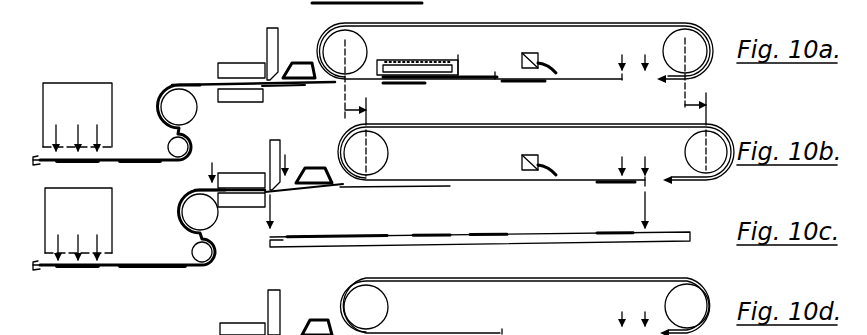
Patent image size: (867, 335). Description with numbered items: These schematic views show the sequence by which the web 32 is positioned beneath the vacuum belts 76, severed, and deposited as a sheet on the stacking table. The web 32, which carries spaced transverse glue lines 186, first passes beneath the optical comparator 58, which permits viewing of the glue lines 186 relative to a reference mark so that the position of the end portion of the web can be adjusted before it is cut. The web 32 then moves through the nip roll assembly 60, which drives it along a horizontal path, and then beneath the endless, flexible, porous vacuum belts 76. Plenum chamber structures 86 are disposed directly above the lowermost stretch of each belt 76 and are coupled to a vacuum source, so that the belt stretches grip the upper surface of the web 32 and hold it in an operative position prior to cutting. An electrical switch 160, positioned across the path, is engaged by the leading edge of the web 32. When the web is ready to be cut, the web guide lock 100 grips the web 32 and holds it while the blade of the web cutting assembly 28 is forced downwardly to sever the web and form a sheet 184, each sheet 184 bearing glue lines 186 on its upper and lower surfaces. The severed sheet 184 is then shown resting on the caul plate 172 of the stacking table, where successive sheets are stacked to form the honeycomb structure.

In FIG. 10A, the web cutting assembly 28 is at (267, 42).
In FIG. 10B, the web cutting assembly 28 is at (268, 152).
In FIG. 10D, the web cutting assembly 28 is at (268, 301).
In FIG. 10A, the web 32 is at (110, 163).
In FIG. 10B, the web 32 is at (131, 269).
In FIG. 10A, the optical comparator 58 is at (108, 121).
In FIG. 10B, the optical comparator 58 is at (108, 226).
In FIG. 10A, the nip roll assembly 60 is at (198, 112).
In FIG. 10B, the nip roll assembly 60 is at (214, 233).
In FIG. 10A, the vacuum belts 76 is at (477, 26).
In FIG. 10B, the vacuum belts 76 is at (477, 128).
In FIG. 10D, the vacuum belts 76 is at (478, 283).
In FIG. 10A, the plenum chamber structures 86 is at (310, 62).
In FIG. 10B, the plenum chamber structures 86 is at (322, 168).
In FIG. 10D, the plenum chamber structures 86 is at (327, 320).
In FIG. 10A, the web guide lock 100 is at (264, 91).
In FIG. 10B, the web guide lock 100 is at (263, 206).
In FIG. 10A, the electrical switch 160 is at (530, 55).
In FIG. 10B, the electrical switch 160 is at (530, 157).
In FIG. 10C, the caul plate 172 is at (656, 236).
In FIG. 10B, the sheet 184 is at (347, 188).
In FIG. 10C, the sheet 184 is at (463, 232).
In FIG. 10A, the glue lines 186 is at (400, 85).
In FIG. 10B, the glue lines 186 is at (172, 269).